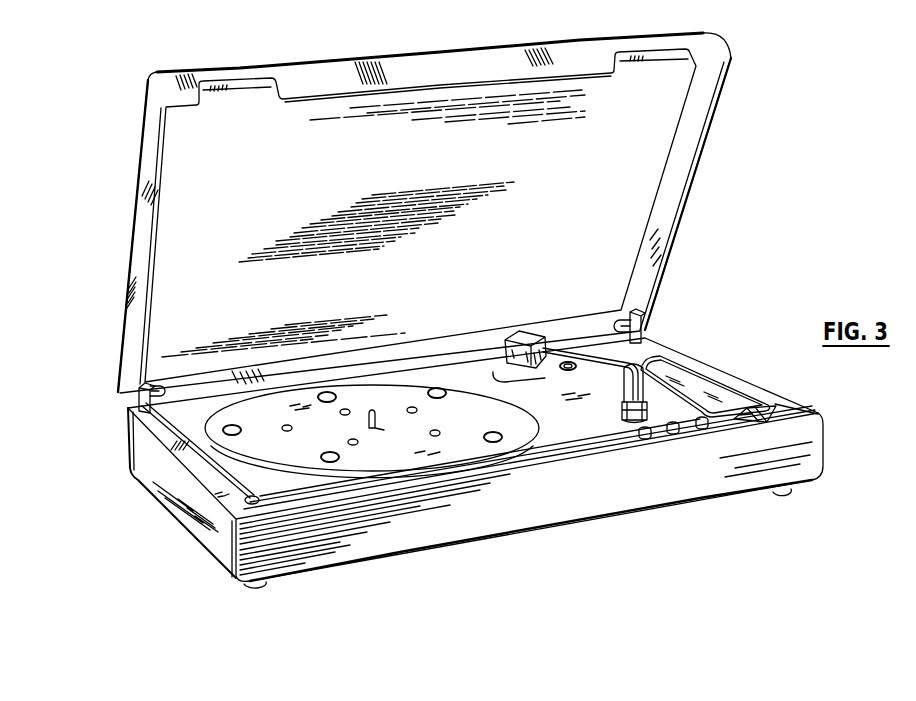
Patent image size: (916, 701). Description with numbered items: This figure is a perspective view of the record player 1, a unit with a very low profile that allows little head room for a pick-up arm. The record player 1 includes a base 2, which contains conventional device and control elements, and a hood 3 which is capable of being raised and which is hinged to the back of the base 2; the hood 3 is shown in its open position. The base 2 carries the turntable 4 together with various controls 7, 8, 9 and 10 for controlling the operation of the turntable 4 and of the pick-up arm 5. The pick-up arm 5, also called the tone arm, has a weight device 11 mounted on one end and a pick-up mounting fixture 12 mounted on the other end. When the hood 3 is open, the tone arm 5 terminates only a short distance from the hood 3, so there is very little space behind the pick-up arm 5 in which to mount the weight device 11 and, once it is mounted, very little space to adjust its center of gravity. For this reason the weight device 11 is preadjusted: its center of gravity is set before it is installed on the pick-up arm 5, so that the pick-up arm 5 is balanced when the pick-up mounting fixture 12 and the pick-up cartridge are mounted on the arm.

The record player 1 is at (772, 290).
The base 2 is at (820, 456).
The hood 3 is at (672, 210).
The turntable 4 is at (205, 432).
The pick-up arm 5 is at (617, 358).
The control 7 is at (645, 440).
The control 8 is at (673, 436).
The control 9 is at (702, 430).
The control 10 is at (752, 423).
The weight device 11 is at (508, 346).
The pick-up mounting fixture 12 is at (622, 414).